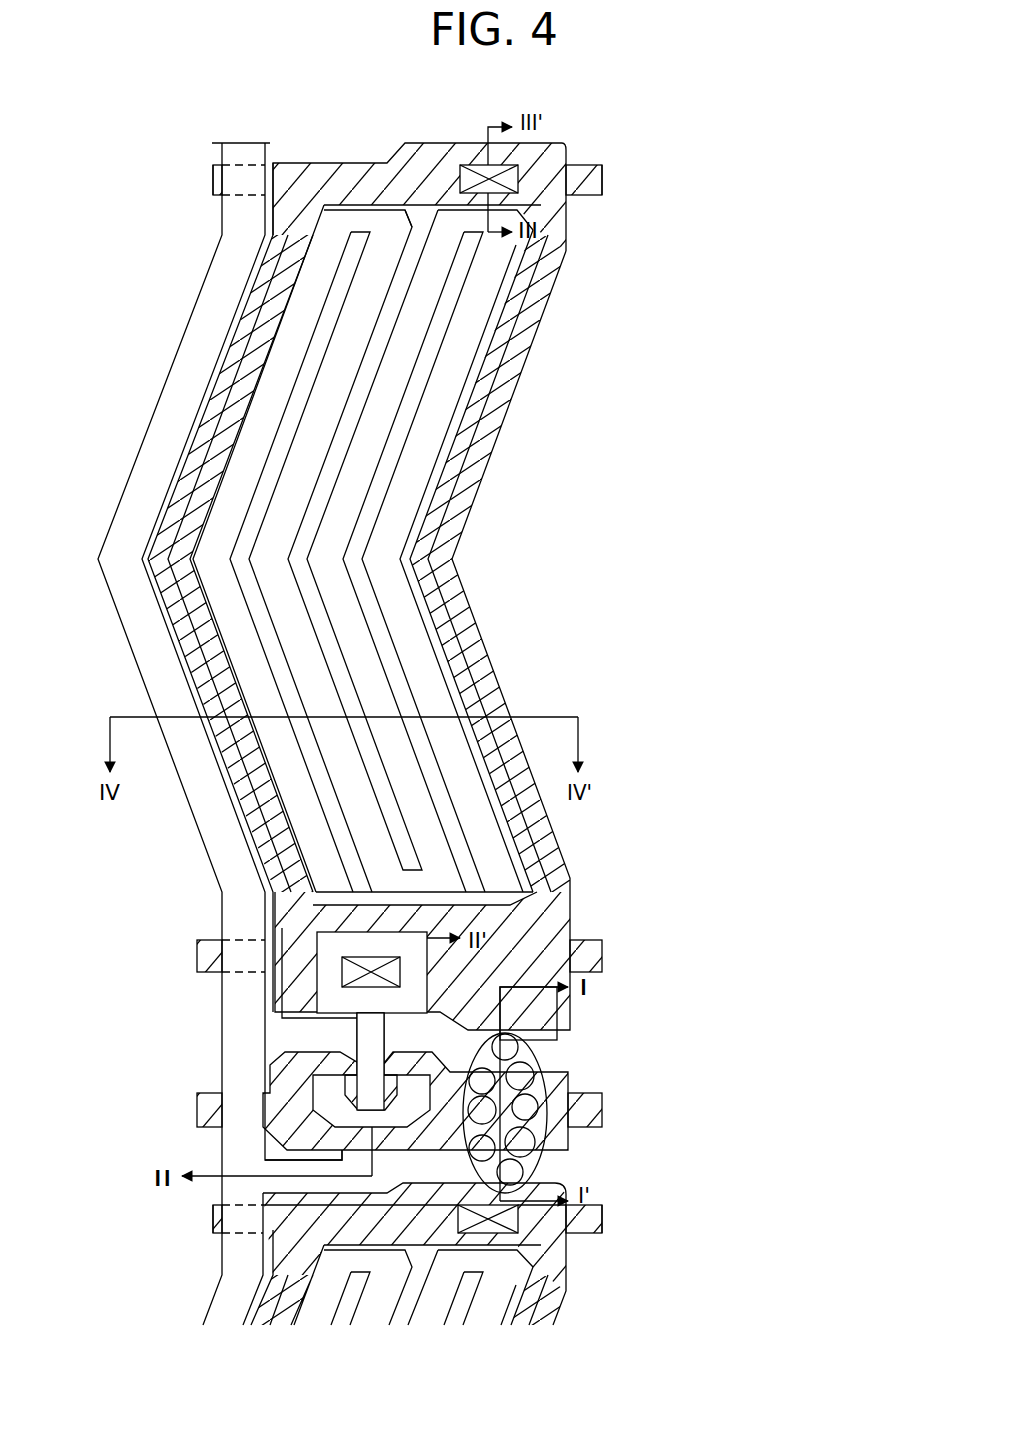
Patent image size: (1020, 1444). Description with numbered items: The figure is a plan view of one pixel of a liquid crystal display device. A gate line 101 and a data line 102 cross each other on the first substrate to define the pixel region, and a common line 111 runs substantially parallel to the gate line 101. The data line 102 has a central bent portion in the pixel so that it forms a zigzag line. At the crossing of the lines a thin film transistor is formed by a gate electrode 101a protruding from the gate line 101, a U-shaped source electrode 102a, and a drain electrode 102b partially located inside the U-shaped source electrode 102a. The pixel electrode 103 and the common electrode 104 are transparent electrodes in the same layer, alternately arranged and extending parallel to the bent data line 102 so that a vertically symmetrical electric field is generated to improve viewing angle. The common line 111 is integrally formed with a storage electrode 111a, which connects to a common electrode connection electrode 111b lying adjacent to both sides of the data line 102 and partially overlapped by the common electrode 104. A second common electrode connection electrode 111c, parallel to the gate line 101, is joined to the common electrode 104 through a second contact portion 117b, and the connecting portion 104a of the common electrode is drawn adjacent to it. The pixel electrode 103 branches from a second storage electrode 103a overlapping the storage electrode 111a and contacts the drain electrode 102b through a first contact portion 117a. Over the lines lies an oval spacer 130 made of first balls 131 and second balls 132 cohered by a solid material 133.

The gate line 101 is at (197, 1128).
The gate electrode 101a is at (391, 1052).
The data line 102 is at (205, 852).
The source electrode 102a is at (407, 1143).
The drain electrode 102b is at (313, 930).
The pixel electrode 103 is at (452, 407).
The second storage electrode 103a is at (572, 997).
The common electrode 104 is at (477, 638).
The common electrode connection portion 104a is at (467, 143).
The common line 111 is at (200, 984).
The storage electrode 111a is at (572, 1023).
The common electrode connection electrode 111b is at (557, 842).
The second common electrode connection electrode 111c is at (442, 148).
The first contact portion 117a is at (340, 978).
The second contact portion 117b is at (562, 150).
The spacer 130 is at (672, 1078).
The first ball 131 is at (527, 1148).
The second ball 132 is at (520, 1177).
The solid material 133 is at (523, 1052).